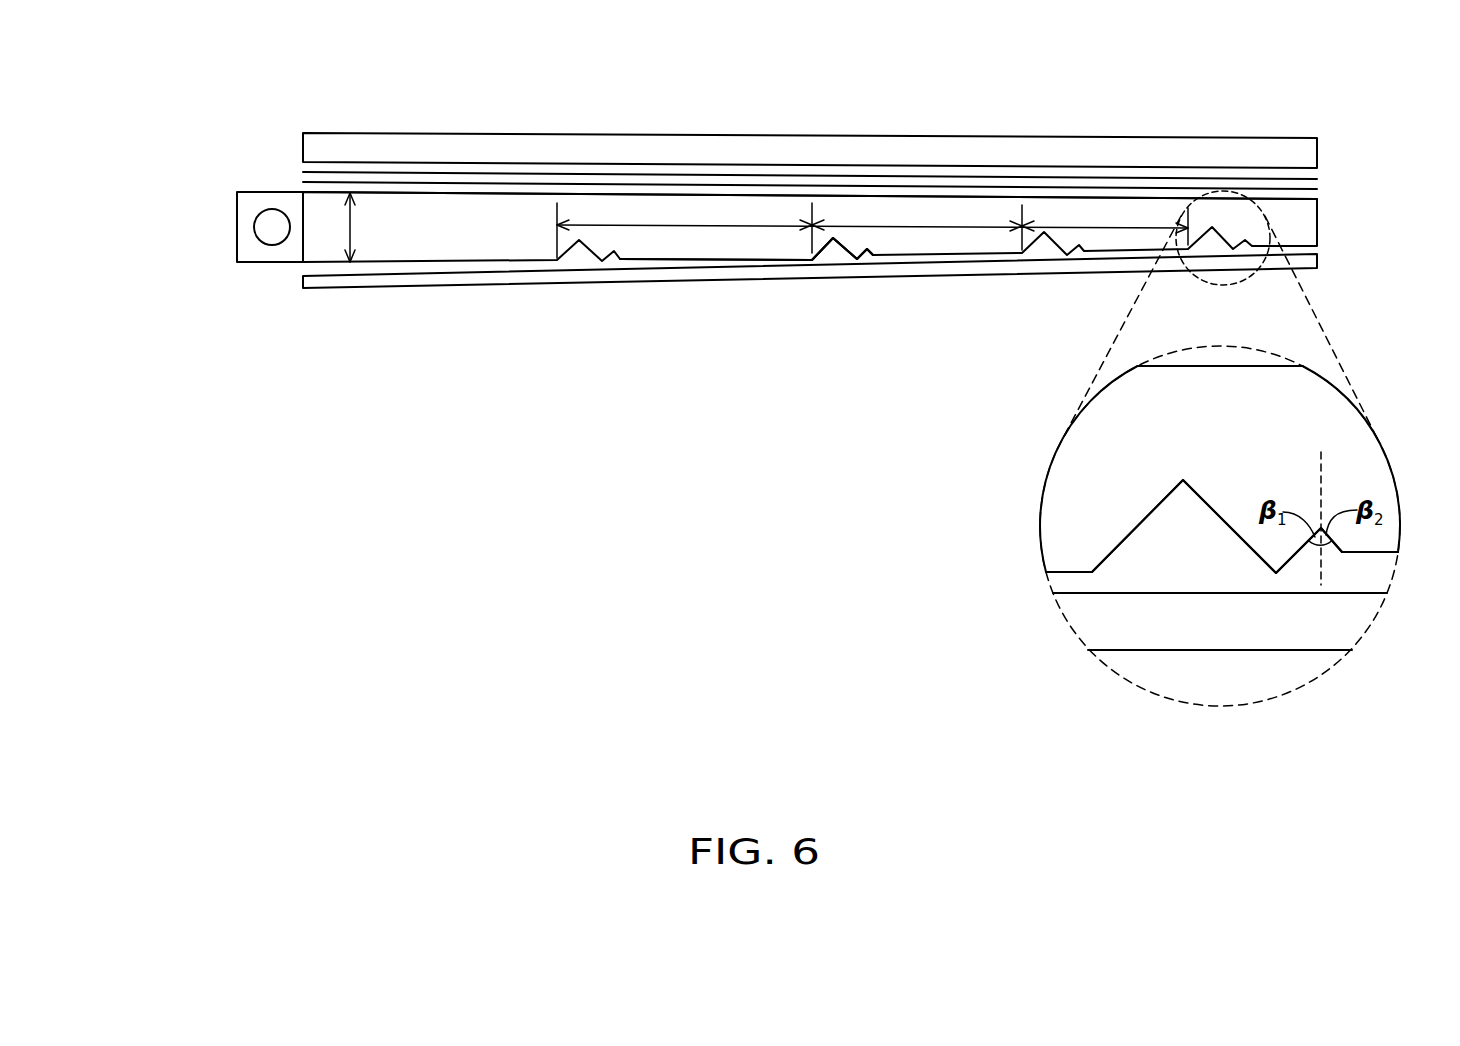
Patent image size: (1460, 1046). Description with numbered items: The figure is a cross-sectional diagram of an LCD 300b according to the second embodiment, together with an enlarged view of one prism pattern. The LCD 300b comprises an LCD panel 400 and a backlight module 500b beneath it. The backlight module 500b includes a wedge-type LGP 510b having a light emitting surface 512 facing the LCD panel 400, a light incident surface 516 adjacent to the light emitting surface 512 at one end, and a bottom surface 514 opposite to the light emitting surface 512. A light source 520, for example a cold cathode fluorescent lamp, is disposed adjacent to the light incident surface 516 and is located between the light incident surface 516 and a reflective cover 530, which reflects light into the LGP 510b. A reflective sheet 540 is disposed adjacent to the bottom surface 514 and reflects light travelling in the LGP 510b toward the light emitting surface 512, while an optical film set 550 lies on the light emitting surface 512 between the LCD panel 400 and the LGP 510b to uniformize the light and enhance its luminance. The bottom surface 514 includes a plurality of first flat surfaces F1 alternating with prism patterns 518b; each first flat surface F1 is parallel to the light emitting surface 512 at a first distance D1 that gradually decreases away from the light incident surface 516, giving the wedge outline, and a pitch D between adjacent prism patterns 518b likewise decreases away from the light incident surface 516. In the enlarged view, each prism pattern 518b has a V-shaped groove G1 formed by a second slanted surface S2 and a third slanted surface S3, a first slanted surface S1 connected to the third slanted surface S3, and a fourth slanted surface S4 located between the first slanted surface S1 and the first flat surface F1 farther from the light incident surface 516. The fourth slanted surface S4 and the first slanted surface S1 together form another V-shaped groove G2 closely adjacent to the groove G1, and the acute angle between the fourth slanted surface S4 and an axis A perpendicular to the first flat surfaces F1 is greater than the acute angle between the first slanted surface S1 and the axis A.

The LCD 300b is at (974, 497).
The LCD panel 400 is at (880, 152).
The backlight module 500b is at (157, 150).
The LGP 510b is at (318, 253).
The light emitting surface 512 is at (715, 195).
The bottom surface 514 is at (883, 386).
The light incident surface 516 is at (300, 217).
The prism patterns 518b is at (843, 250).
The light source 520 is at (267, 222).
The reflective cover 530 is at (240, 236).
The reflective sheet 540 is at (303, 278).
The optical film set 550 is at (282, 170).
The first flat surfaces F1 is at (785, 262).
The groove G1 is at (1207, 768).
The groove G2 is at (1168, 816).
The first slanted surface S1 is at (1300, 553).
The second slanted surface S2 is at (1138, 528).
The third slanted surface S3 is at (1228, 527).
The fourth slanted surface S4 is at (1338, 551).
The axis A is at (1318, 476).
The pitch D is at (872, 229).
The first distance D1 is at (364, 227).